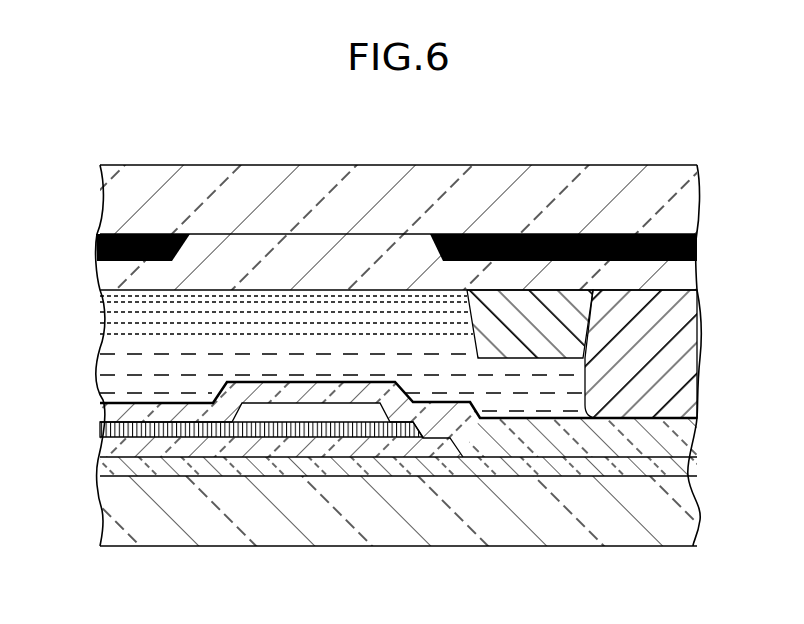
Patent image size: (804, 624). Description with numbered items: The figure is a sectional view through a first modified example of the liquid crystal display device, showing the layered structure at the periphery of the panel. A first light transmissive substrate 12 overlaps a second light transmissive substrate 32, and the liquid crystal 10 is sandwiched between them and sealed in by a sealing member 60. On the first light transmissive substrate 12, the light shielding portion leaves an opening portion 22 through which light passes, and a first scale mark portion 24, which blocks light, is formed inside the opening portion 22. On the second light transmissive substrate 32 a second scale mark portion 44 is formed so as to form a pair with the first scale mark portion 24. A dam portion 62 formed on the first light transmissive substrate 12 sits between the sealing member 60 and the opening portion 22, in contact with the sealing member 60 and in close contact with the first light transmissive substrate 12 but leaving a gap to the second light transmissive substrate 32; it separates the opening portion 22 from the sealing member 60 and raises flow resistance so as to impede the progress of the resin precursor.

The liquid crystal 10 is at (123, 346).
The first light transmissive substrate 12 is at (683, 203).
The opening portion 22 is at (316, 250).
The first scale mark portion 24 is at (150, 240).
The second light transmissive substrate 32 is at (682, 507).
The second scale mark portion 44 is at (302, 415).
The sealing member 60 is at (675, 355).
The dam portion 62 is at (577, 325).